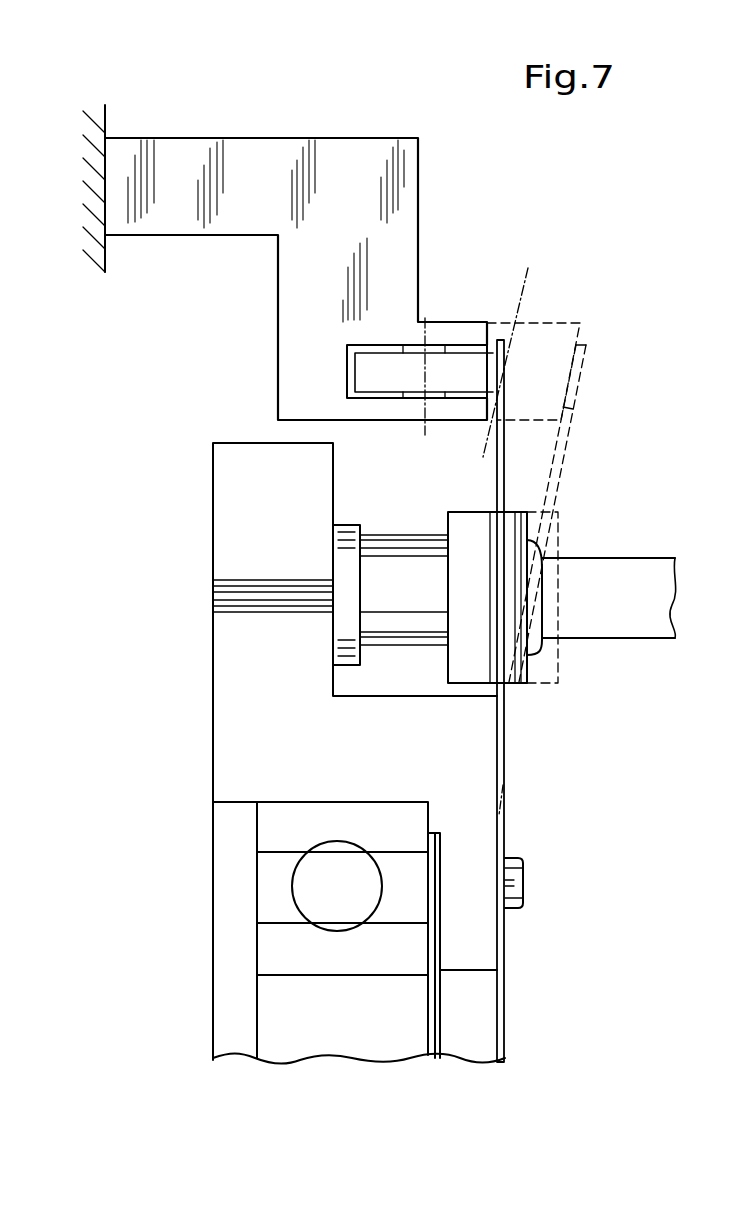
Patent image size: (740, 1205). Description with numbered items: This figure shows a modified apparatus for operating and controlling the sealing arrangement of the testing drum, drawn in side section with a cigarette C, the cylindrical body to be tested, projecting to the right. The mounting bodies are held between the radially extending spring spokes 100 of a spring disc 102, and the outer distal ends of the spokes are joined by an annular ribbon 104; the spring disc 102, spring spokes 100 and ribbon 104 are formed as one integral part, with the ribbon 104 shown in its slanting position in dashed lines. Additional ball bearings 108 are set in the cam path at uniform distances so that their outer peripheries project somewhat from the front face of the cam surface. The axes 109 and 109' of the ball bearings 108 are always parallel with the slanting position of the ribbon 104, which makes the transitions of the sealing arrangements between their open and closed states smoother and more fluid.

The spring spokes 100 is at (557, 482).
The spring disc 102 is at (507, 813).
The ribbon 104 is at (580, 382).
The ball bearings 108 is at (445, 368).
The axis of ball bearing 109 is at (442, 343).
The axis of ball bearing 109' is at (538, 529).
The cigarette C is at (622, 570).